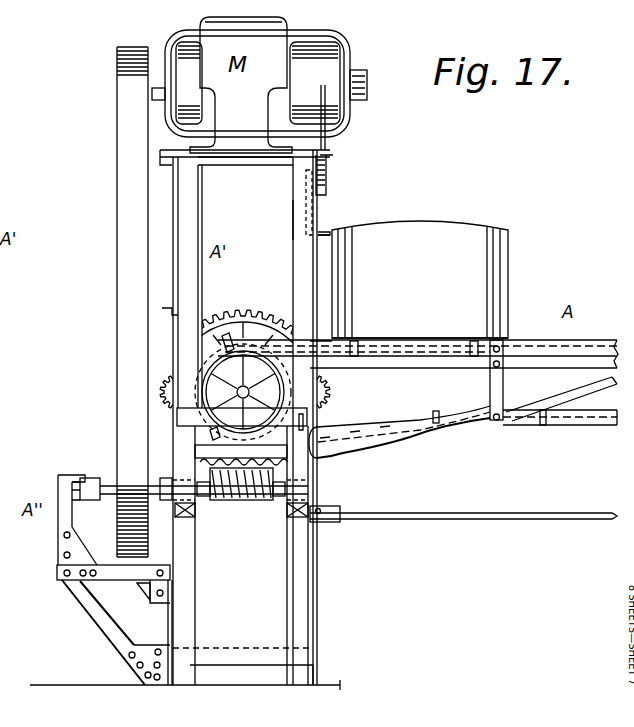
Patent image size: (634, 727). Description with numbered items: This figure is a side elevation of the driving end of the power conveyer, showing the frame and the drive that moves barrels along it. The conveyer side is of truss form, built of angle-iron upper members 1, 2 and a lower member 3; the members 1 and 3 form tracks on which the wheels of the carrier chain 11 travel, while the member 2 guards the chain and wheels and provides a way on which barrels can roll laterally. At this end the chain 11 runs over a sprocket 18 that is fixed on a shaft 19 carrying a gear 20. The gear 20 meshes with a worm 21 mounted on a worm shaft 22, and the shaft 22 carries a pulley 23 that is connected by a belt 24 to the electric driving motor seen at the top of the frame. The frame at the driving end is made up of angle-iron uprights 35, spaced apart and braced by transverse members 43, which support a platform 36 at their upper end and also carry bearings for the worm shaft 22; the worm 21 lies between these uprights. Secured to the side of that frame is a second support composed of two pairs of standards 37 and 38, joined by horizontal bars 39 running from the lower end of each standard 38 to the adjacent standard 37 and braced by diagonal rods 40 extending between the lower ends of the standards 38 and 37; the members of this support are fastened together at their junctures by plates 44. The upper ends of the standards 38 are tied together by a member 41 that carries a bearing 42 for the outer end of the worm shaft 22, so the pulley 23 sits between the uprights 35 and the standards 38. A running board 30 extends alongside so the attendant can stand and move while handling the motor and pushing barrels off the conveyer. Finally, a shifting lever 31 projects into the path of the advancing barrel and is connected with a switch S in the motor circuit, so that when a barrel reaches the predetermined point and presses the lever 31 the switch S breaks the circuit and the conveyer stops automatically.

The upper member 1 is at (544, 369).
The upper member 2 is at (560, 332).
The lower member 3 is at (561, 426).
The carrier chain 11 is at (379, 428).
The sprocket 18 is at (326, 385).
The shaft 19 is at (236, 386).
The gear 20 is at (252, 307).
The worm 21 is at (242, 492).
The worm shaft 22 is at (102, 480).
The pulley 23 is at (97, 427).
The belt 24 is at (120, 192).
The running board 30 is at (421, 515).
The shifting lever 31 is at (330, 240).
The uprights 35 is at (293, 218).
The platform 36 is at (243, 165).
The standard 37 is at (158, 614).
The standard 38 is at (60, 518).
The horizontal bar 39 is at (114, 580).
The diagonal rod 40 is at (96, 607).
The member 41 is at (58, 478).
The bearing 42 is at (88, 500).
The transverse member 43 is at (266, 510).
The plate 44 is at (62, 548).
The switch S is at (326, 417).